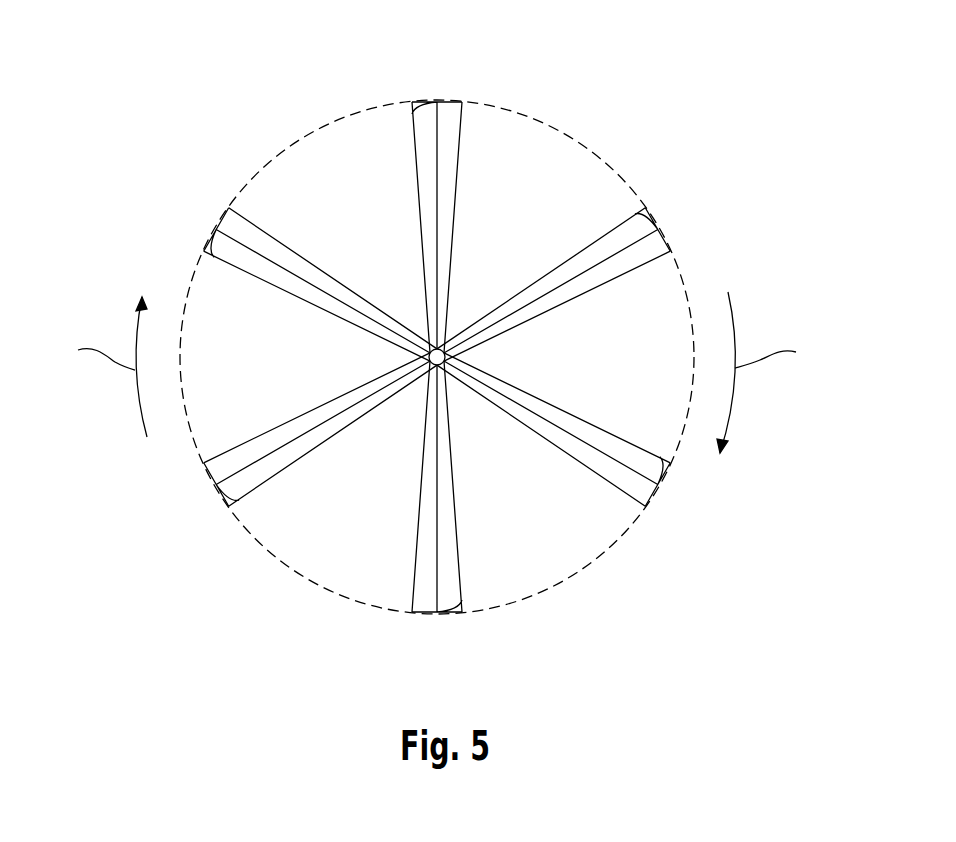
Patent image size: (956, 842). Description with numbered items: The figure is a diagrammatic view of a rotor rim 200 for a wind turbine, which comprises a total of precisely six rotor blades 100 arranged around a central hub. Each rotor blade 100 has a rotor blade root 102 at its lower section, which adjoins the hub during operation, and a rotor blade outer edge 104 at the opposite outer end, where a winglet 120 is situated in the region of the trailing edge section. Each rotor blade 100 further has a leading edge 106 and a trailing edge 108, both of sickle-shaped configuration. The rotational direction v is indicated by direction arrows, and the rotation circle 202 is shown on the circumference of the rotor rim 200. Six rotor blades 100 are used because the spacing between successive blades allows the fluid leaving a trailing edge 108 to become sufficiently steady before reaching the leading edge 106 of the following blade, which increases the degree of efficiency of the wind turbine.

The rotor blade 100 is at (465, 148).
The rotor blade root 102 is at (444, 348).
The rotor blade outer edge 104 is at (651, 232).
The leading edge 106 is at (570, 305).
The trailing edge 108 is at (572, 257).
The winglet 120 is at (667, 465).
The rotor rim 200 is at (682, 90).
The rotation circle 202 is at (367, 107).